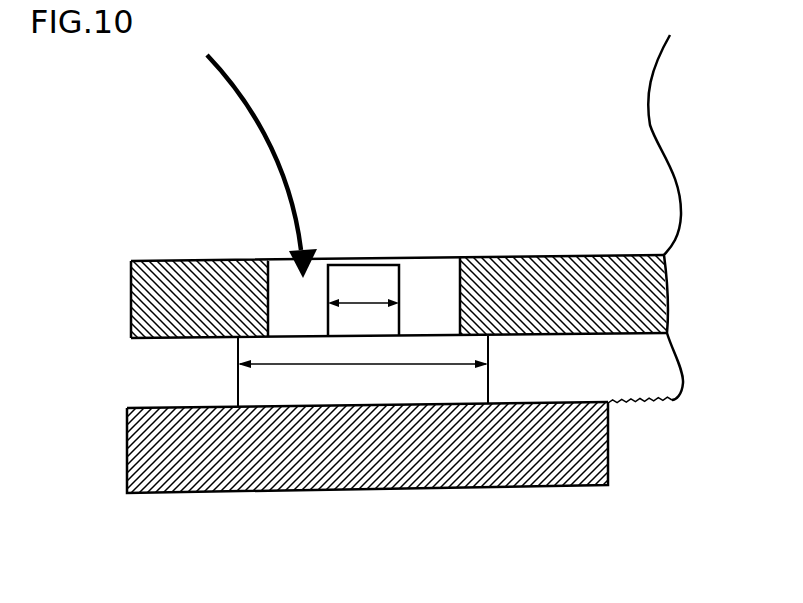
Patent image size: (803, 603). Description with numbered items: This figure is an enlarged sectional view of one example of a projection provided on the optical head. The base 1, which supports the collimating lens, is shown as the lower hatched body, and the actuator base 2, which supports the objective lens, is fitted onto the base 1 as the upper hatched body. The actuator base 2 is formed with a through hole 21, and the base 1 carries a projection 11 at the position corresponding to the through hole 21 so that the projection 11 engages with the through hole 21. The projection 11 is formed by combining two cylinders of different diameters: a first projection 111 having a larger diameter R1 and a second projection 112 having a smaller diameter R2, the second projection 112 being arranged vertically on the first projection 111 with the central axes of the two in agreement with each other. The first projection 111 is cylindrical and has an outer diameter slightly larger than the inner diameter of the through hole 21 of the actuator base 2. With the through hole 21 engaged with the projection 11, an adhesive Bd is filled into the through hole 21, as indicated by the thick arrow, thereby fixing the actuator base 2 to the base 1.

The base 1 is at (540, 462).
The projection 11 is at (285, 416).
The first projection 111 is at (353, 380).
The second projection 112 is at (360, 282).
The actuator base 2 is at (603, 298).
The through hole 21 is at (463, 289).
The larger diameter R1 is at (420, 363).
The smaller diameter R2 is at (385, 300).
The adhesive Bd is at (262, 163).